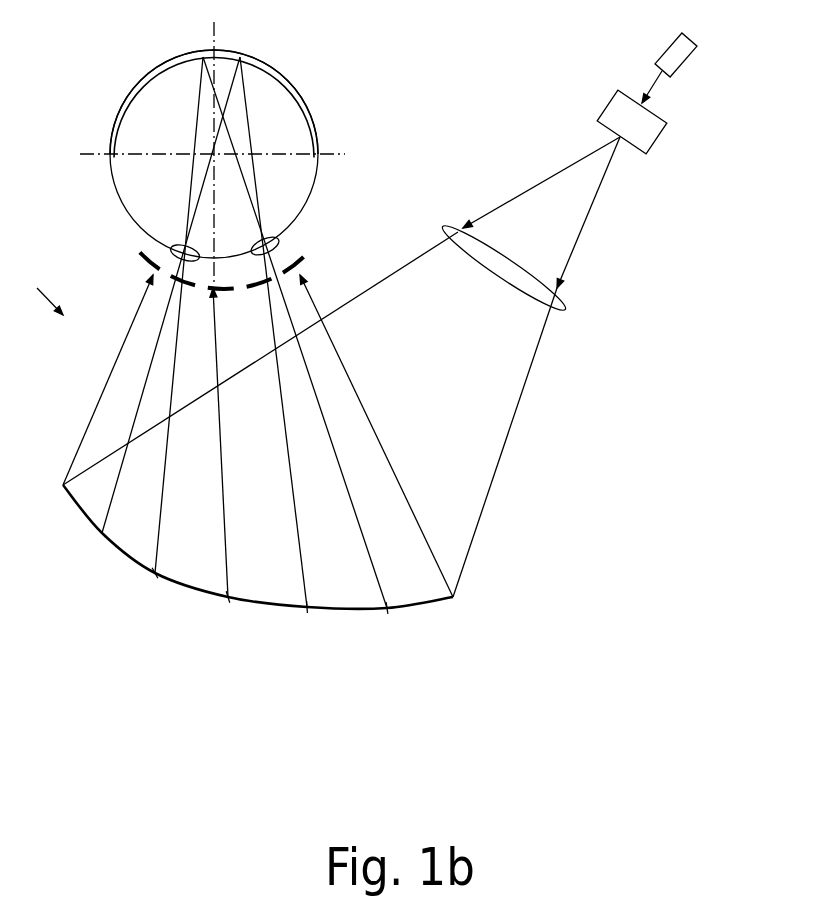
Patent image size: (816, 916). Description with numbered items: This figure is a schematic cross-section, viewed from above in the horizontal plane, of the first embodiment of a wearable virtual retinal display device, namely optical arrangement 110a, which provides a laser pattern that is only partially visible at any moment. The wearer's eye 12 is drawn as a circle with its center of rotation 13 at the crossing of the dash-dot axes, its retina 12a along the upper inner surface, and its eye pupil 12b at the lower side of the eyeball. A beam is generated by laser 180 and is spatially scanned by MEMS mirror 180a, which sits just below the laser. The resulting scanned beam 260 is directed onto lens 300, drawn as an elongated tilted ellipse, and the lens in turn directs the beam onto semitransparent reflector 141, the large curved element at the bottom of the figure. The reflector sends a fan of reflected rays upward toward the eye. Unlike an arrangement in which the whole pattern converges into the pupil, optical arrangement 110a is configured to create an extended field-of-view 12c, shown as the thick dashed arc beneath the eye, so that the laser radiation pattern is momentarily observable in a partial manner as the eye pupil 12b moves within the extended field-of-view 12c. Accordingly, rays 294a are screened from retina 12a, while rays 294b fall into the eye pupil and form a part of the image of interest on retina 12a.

The eye 12 is at (133, 191).
The retina 12a is at (311, 108).
The eye pupil 12b is at (172, 248).
The extended field-of-view 12c is at (304, 259).
The center of rotation 13 is at (205, 163).
The optical arrangement 110a is at (36, 287).
The rays 294a is at (87, 427).
The rays 294b is at (137, 407).
The semitransparent reflector 141 is at (423, 611).
The lens 300 is at (445, 226).
The scanned beam 260 is at (586, 224).
The laser 180 is at (683, 63).
The MEMS mirror 180a is at (657, 137).